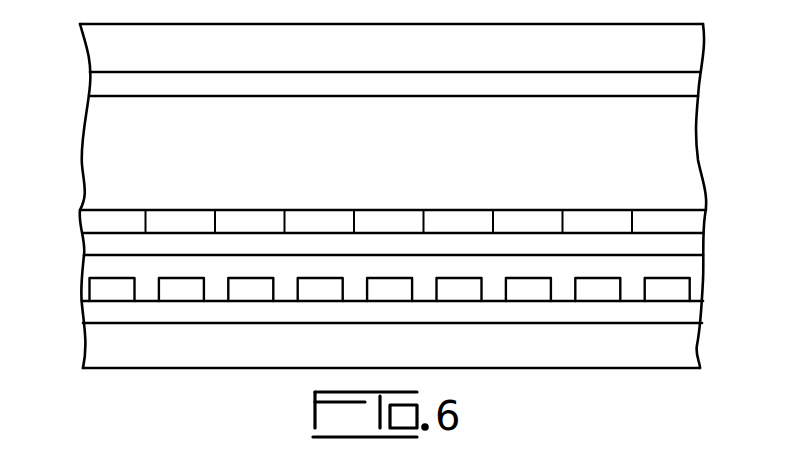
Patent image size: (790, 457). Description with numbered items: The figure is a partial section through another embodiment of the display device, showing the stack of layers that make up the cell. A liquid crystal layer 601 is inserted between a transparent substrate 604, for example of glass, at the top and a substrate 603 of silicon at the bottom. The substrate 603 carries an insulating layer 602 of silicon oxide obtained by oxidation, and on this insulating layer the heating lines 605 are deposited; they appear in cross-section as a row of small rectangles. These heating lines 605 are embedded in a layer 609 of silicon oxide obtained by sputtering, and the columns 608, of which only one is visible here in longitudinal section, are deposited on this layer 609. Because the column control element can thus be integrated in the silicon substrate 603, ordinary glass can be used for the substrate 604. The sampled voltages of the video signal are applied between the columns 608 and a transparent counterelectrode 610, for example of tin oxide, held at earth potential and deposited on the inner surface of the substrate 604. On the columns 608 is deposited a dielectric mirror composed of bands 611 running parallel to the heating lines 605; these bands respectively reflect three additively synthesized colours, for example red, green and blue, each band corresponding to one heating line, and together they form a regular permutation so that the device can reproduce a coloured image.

The liquid crystal layer 601 is at (667, 143).
The insulating layer 602 is at (108, 312).
The substrate 603 is at (667, 350).
The transparent substrate 604 is at (675, 60).
The heating lines 605 is at (668, 290).
The columns 608 is at (675, 247).
The layer 609 is at (100, 265).
The transparent counterelectrode 610 is at (97, 83).
The bands 611 is at (97, 211).